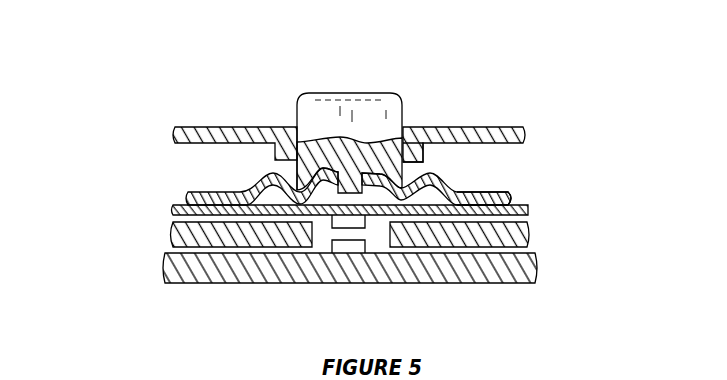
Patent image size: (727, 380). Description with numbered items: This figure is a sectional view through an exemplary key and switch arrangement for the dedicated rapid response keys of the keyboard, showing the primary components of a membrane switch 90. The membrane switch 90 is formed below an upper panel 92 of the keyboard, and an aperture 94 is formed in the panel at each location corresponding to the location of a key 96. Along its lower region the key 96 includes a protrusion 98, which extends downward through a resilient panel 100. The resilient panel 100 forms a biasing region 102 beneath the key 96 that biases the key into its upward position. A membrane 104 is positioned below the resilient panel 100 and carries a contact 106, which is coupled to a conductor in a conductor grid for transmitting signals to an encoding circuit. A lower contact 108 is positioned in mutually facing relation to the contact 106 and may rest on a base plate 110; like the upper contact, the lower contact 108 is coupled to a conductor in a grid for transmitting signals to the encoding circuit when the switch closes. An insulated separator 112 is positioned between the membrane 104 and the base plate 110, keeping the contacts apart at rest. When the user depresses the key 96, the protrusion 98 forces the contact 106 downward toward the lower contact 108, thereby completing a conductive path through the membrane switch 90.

The membrane switch 90 is at (510, 157).
The upper panel 92 is at (490, 133).
The aperture 94 is at (405, 135).
The key 96 is at (315, 108).
The protrusion 98 is at (348, 185).
The resilient panel 100 is at (488, 200).
The biasing region 102 is at (418, 183).
The membrane 104 is at (238, 211).
The contact 106 is at (358, 220).
The lower contact 108 is at (340, 249).
The base plate 110 is at (483, 275).
The insulated separator 112 is at (187, 233).